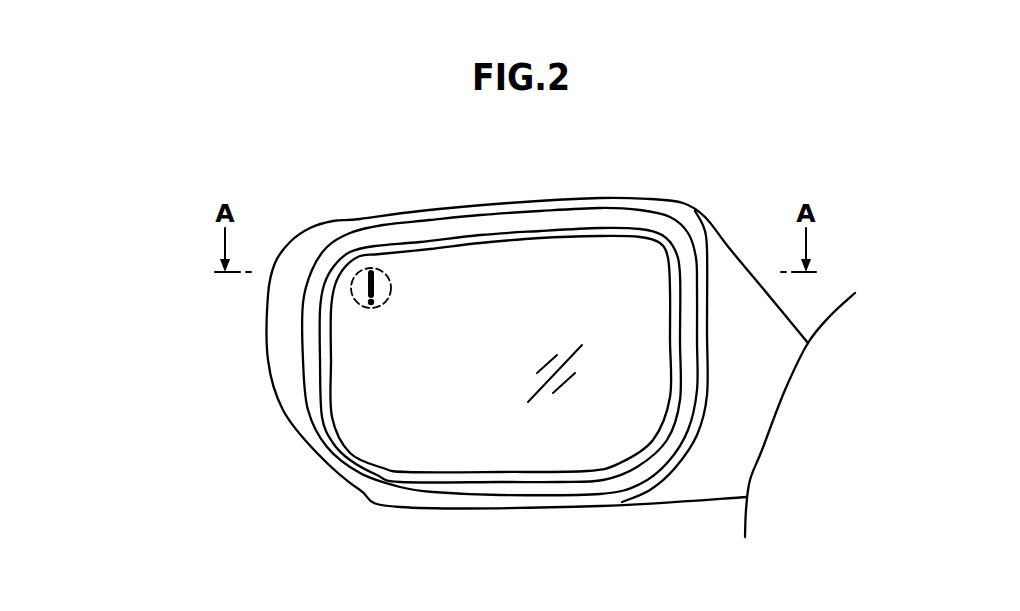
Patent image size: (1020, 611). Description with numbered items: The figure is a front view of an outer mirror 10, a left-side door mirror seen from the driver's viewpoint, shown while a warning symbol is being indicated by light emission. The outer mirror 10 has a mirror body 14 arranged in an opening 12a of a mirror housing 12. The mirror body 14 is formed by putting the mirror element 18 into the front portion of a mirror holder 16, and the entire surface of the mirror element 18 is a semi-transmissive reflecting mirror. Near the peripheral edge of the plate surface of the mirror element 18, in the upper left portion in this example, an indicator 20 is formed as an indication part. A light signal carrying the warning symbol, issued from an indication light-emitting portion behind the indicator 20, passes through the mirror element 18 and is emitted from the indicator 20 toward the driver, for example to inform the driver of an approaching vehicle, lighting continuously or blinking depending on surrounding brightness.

The outer mirror 10 is at (622, 152).
The mirror housing 12 is at (677, 200).
The opening 12a is at (688, 262).
The mirror body 14 is at (512, 231).
The mirror holder 16 is at (543, 473).
The mirror element 18 is at (477, 453).
The indicator 20 is at (370, 267).